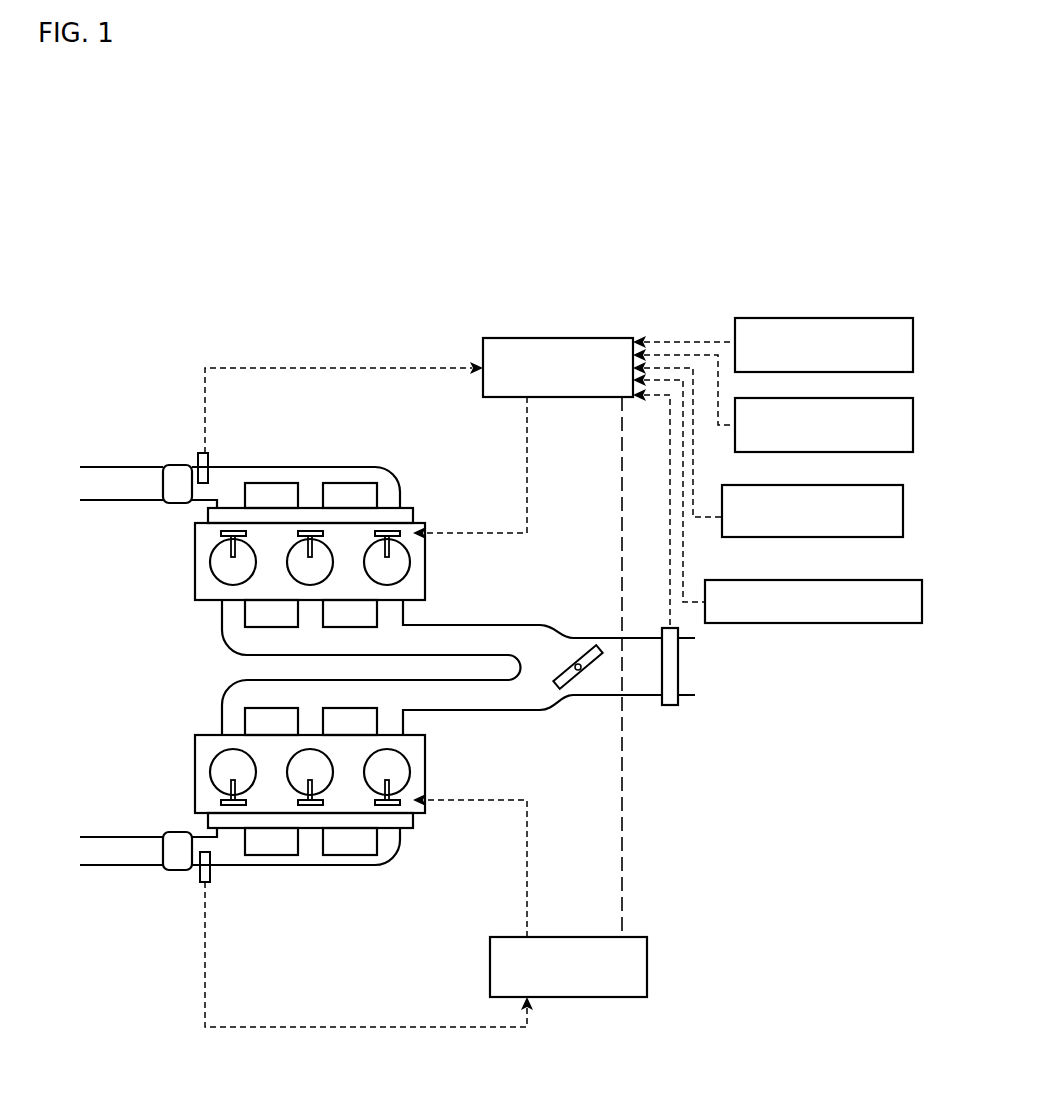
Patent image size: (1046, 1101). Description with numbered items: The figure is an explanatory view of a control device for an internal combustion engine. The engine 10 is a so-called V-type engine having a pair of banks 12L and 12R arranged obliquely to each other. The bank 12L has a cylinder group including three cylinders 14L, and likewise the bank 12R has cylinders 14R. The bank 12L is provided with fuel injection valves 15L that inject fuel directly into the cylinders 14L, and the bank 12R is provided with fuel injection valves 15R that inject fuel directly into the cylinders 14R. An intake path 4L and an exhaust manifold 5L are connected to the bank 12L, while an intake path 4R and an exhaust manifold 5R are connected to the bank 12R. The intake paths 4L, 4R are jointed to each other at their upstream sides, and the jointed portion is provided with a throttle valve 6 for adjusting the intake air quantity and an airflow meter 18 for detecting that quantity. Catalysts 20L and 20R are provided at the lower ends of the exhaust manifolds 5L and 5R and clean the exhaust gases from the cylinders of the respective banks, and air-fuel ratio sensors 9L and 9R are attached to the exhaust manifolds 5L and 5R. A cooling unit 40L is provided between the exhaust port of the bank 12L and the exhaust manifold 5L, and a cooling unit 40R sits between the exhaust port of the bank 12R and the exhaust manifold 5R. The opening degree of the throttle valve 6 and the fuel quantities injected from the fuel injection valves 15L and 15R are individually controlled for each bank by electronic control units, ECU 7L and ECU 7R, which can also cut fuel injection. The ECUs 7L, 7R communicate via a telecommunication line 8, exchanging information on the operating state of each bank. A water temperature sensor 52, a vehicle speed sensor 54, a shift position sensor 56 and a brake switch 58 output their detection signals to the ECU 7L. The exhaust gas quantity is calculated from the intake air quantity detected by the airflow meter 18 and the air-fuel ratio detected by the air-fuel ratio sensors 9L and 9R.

The engine 10 is at (138, 695).
The bank 12L is at (158, 579).
The bank 12R is at (175, 774).
The cylinders 14L is at (217, 575).
The cylinders 14R is at (213, 775).
The fuel injection valves 15L is at (220, 534).
The fuel injection valves 15R is at (220, 792).
The exhaust manifold 5L is at (318, 467).
The exhaust manifold 5R is at (318, 867).
The cooling unit 40L is at (415, 508).
The cooling unit 40R is at (417, 822).
The catalyst 20L is at (167, 503).
The catalyst 20R is at (162, 835).
The air-fuel ratio sensor 9L is at (198, 455).
The air-fuel ratio sensor 9R is at (198, 882).
The intake path 4L is at (460, 625).
The intake path 4R is at (458, 712).
The throttle valve 6 is at (585, 645).
The airflow meter 18 is at (676, 705).
The ECU 7L is at (585, 338).
The ECU 7R is at (605, 997).
The telecommunication line 8 is at (622, 545).
The water temperature sensor 52 is at (815, 318).
The vehicle speed sensor 54 is at (810, 398).
The shift position sensor 56 is at (820, 485).
The brake switch 58 is at (815, 580).